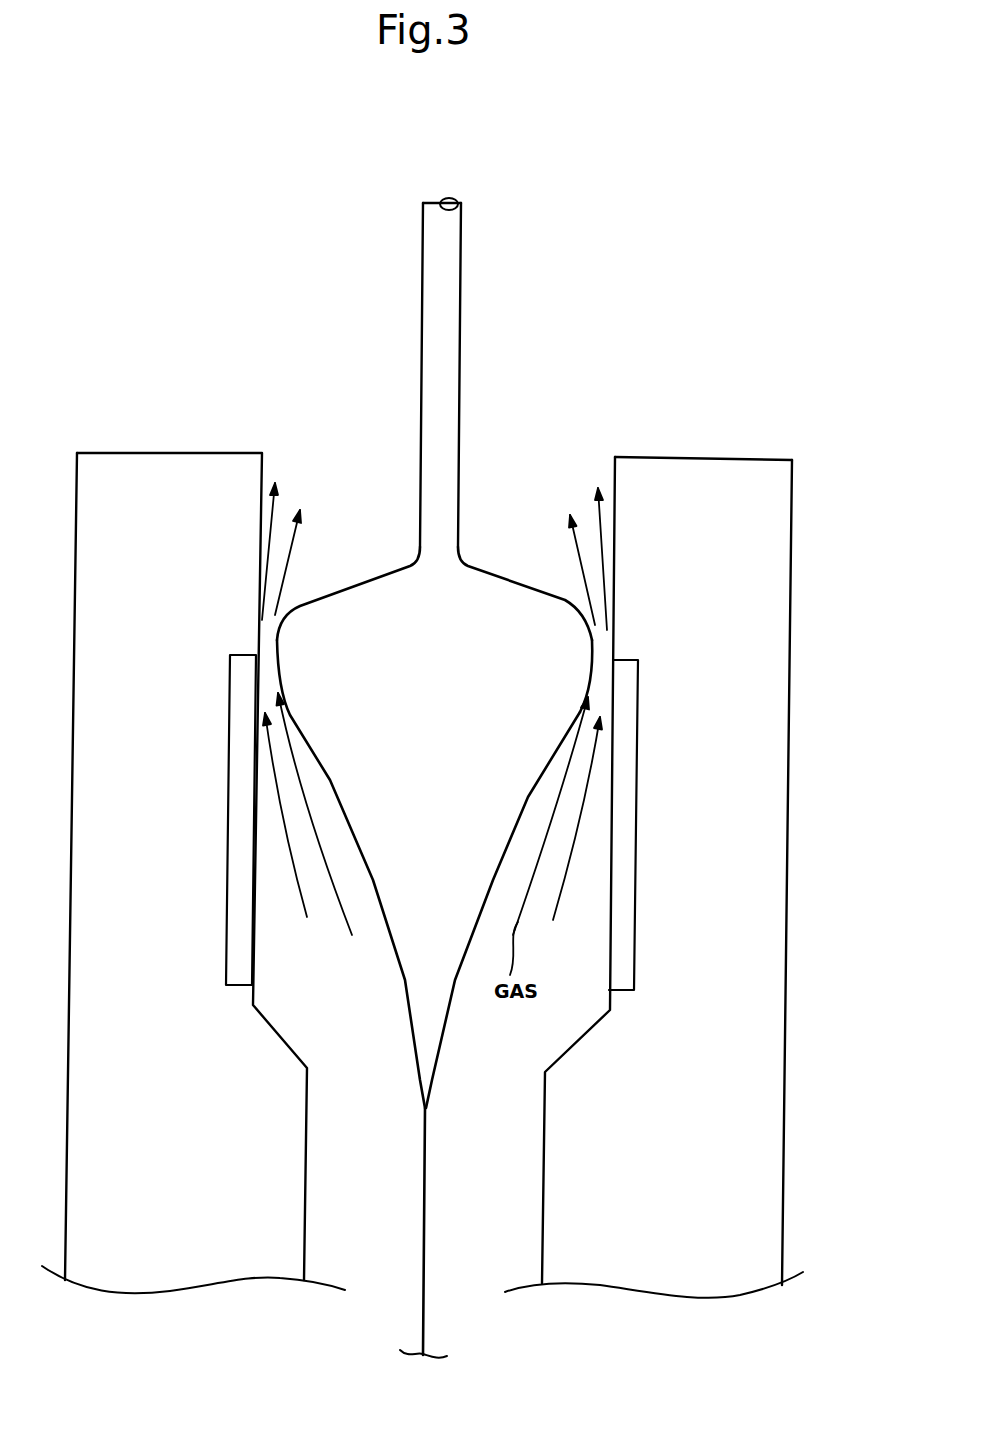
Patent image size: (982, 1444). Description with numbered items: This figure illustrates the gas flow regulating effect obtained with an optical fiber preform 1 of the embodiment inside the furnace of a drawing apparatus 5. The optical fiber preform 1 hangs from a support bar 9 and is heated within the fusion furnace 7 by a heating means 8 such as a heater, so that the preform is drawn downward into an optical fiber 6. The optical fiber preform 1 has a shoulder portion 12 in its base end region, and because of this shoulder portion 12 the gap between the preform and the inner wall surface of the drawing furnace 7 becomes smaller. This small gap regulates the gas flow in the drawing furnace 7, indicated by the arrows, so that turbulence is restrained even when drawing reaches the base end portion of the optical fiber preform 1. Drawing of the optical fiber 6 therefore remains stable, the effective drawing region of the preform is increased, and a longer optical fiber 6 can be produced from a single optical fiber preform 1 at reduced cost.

The optical fiber preform 1 is at (503, 623).
The drawing apparatus 5 is at (755, 377).
The optical fiber 6 is at (427, 1278).
The fusion furnace 7 is at (500, 503).
The heating means 8 is at (622, 793).
The support bar 9 is at (450, 307).
The shoulder portion 12 is at (560, 657).